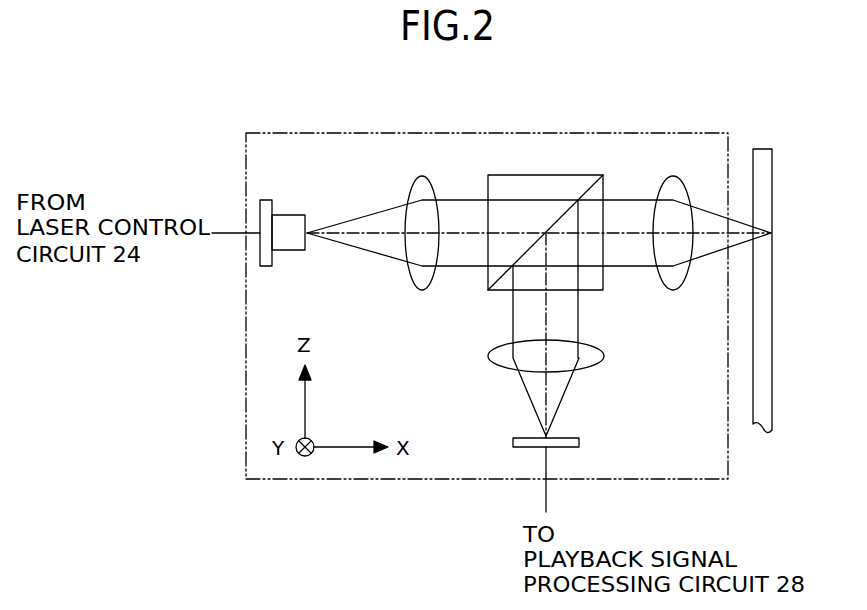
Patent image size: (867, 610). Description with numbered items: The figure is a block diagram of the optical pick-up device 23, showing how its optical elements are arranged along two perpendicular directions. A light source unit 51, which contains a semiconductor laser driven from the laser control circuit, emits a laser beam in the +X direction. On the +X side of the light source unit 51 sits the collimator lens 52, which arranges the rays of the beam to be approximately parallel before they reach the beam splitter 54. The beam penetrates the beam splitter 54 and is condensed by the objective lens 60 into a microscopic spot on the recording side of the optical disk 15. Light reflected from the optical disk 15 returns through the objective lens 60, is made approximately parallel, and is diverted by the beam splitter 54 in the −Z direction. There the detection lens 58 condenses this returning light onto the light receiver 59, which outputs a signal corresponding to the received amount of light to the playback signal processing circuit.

The optical disk 15 is at (772, 300).
The optical pick-up device 23 is at (628, 133).
The light source unit 51 is at (291, 215).
The collimator lens 52 is at (414, 281).
The beam splitter 54 is at (553, 175).
The detection lens 58 is at (490, 358).
The light receiver 59 is at (580, 440).
The objective lens 60 is at (670, 292).